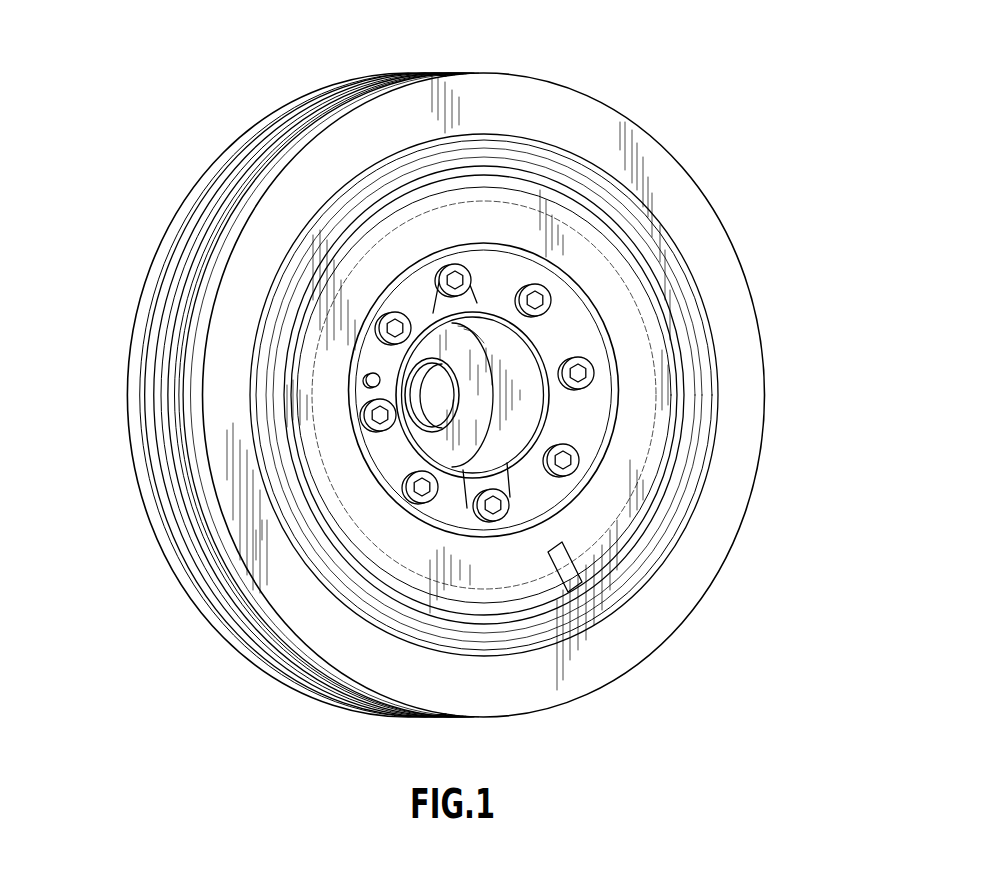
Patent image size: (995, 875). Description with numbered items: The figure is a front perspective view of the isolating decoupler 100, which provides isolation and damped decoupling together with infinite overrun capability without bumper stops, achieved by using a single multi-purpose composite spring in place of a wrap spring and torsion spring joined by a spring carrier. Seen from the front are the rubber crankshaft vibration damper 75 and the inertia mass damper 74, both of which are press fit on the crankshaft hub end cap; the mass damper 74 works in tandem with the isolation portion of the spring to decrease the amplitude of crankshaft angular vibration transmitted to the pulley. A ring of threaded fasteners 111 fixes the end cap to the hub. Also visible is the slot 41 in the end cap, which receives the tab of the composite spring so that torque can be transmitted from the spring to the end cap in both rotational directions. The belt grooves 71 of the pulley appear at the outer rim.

The isolating decoupler 100 is at (637, 81).
The inertia mass damper 74 is at (478, 98).
The belt grooves of pulley rim 71 is at (148, 423).
The rubber crankshaft vibration damper 75 is at (548, 165).
The threaded fasteners 111 is at (562, 452).
The slot 41 is at (565, 548).